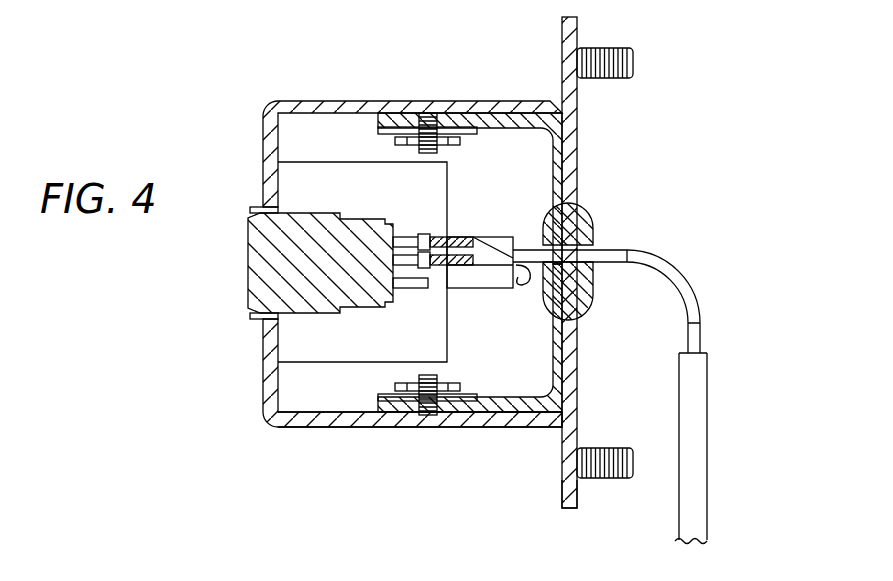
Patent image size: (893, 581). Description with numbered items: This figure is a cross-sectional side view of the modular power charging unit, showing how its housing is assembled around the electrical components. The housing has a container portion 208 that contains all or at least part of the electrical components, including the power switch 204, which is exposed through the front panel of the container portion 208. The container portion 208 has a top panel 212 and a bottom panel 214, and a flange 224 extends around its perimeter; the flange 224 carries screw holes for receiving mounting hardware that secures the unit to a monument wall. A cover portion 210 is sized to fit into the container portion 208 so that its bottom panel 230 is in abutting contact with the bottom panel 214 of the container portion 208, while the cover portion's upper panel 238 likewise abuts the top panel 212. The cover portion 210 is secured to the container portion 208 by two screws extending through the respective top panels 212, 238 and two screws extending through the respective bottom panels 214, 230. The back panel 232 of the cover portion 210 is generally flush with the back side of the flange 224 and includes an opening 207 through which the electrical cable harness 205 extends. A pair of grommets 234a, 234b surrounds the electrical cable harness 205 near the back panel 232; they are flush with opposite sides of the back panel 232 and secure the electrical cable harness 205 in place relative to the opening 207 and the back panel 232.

The container portion 208 is at (230, 84).
The top panel 212 is at (457, 100).
The upper mounting bracket 238 is at (522, 118).
The cover portion 210 is at (605, 131).
The grommet 234a is at (587, 200).
The electrical cable harness 205 is at (495, 237).
The power switch 204 is at (285, 283).
The opening 207 is at (575, 263).
The grommet 234b is at (547, 297).
The back panel 232 is at (575, 337).
The bottom panel 214 is at (340, 427).
The bottom panel 230 is at (508, 405).
The flange 224 is at (577, 497).